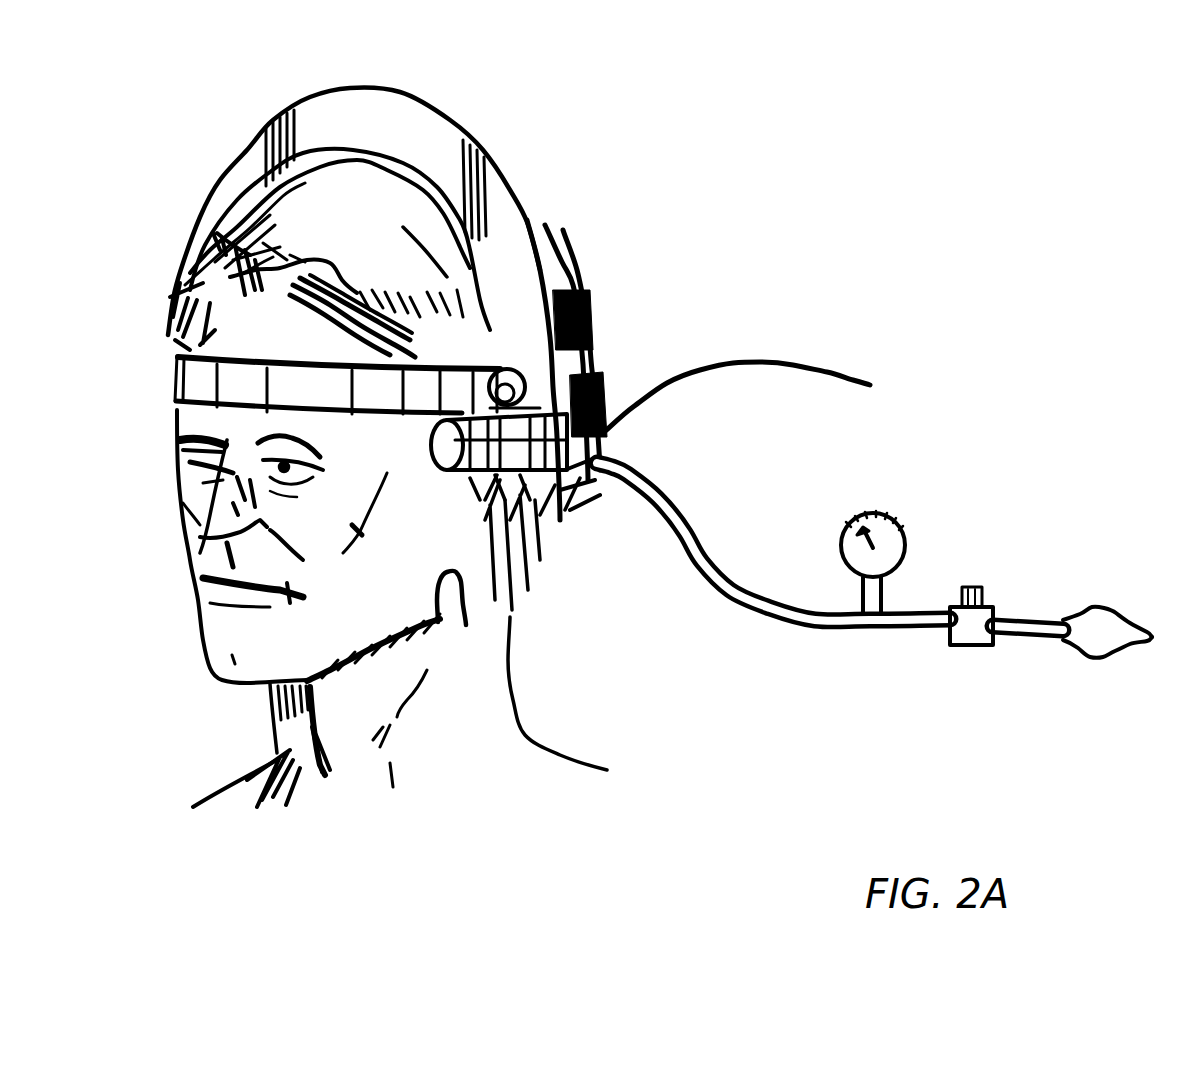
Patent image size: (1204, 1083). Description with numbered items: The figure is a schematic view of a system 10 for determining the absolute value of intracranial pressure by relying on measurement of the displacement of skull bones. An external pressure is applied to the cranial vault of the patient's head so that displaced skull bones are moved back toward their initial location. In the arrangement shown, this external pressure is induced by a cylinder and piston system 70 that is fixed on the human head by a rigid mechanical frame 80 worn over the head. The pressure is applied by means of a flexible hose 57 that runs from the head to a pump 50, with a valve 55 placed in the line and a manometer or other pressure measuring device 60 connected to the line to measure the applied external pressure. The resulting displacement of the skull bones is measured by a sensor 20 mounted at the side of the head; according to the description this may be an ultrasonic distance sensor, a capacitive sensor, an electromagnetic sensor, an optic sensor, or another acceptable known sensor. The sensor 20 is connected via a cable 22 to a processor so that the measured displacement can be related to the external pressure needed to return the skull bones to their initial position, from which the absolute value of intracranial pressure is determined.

The system 10 is at (480, 795).
The rigid mechanical frame 80 is at (400, 125).
The cylinder and piston system 70 is at (597, 373).
The cable 22 is at (767, 357).
The sensor 20 is at (605, 442).
The flexible hose 57 is at (697, 550).
The pressure measuring device 60 is at (900, 533).
The valve 55 is at (963, 633).
The pump 50 is at (1103, 640).